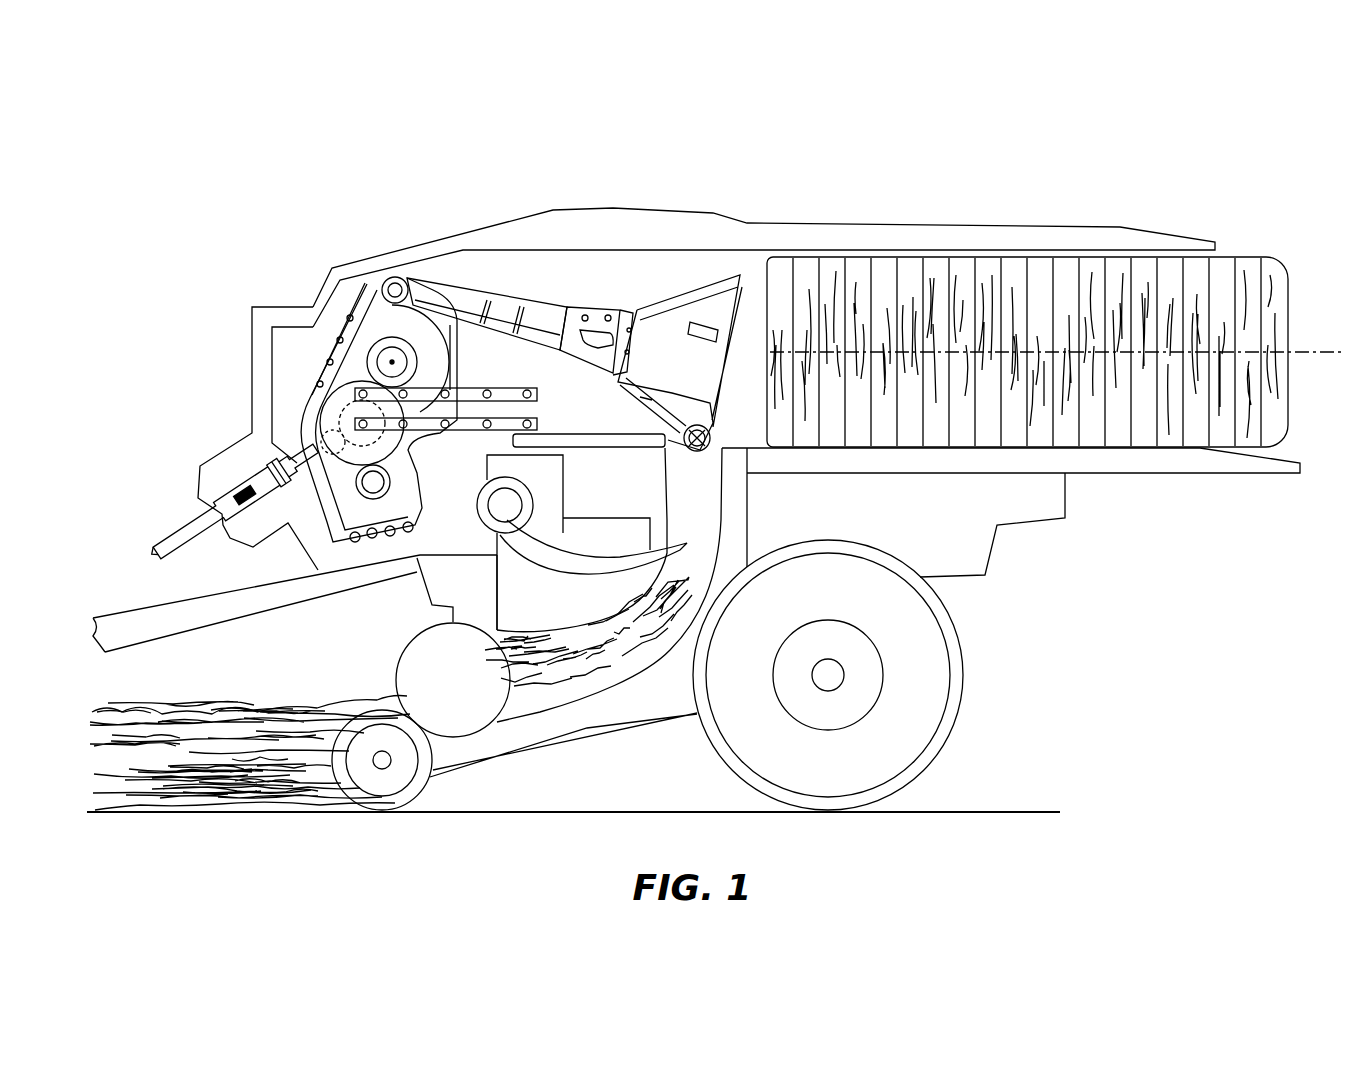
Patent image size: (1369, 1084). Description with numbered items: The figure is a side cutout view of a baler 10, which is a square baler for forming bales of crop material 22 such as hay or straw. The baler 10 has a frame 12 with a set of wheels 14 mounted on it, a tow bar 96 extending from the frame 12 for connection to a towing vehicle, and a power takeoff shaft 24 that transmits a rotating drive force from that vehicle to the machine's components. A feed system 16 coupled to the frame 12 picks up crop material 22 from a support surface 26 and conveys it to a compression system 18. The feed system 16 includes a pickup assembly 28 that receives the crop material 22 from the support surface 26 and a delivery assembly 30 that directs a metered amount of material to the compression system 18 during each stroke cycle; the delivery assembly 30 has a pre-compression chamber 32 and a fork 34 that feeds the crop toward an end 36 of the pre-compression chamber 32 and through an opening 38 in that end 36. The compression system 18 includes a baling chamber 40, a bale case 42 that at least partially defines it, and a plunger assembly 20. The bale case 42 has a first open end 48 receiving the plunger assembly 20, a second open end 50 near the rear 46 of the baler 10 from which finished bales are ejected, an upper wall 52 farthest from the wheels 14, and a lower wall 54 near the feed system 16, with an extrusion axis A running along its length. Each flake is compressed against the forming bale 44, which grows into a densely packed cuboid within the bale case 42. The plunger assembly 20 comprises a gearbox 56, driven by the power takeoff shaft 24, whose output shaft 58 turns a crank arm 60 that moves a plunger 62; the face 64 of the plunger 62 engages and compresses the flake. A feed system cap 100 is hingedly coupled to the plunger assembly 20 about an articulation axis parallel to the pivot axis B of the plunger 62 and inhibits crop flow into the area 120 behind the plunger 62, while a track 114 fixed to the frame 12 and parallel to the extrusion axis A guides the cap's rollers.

The baler 10 is at (293, 135).
The frame 12 is at (1020, 525).
The wheels 14 is at (938, 670).
The feed system 16 is at (412, 603).
The compression system 18 is at (737, 205).
The plunger assembly 20 is at (508, 267).
The crop material 22 is at (240, 722).
The power takeoff shaft 24 is at (170, 530).
The support surface 26 is at (985, 812).
The pickup assembly 28 is at (447, 790).
The delivery assembly 30 is at (633, 672).
The pre-compression chamber 32 is at (727, 548).
The fork 34 is at (563, 533).
The end 36 is at (729, 456).
The opening 38 is at (722, 430).
The baling chamber 40 is at (653, 268).
The bale case 42 is at (1045, 228).
The forming bale 44 is at (935, 250).
The rear 46 is at (1301, 449).
The first open end 48 is at (738, 261).
The second open end 50 is at (1224, 242).
The upper wall 52 is at (855, 250).
The lower wall 54 is at (1115, 463).
The gearbox 56 is at (363, 345).
The output shaft 58 is at (388, 363).
The crank arm 60 is at (405, 325).
The plunger 62 is at (640, 307).
The face 64 is at (731, 339).
The tow bar 96 is at (112, 612).
The feed system cap 100 is at (617, 433).
The track 114 is at (477, 390).
The area 120 is at (540, 370).
The extrusion axis A is at (1305, 352).
The pivot axis B is at (700, 450).